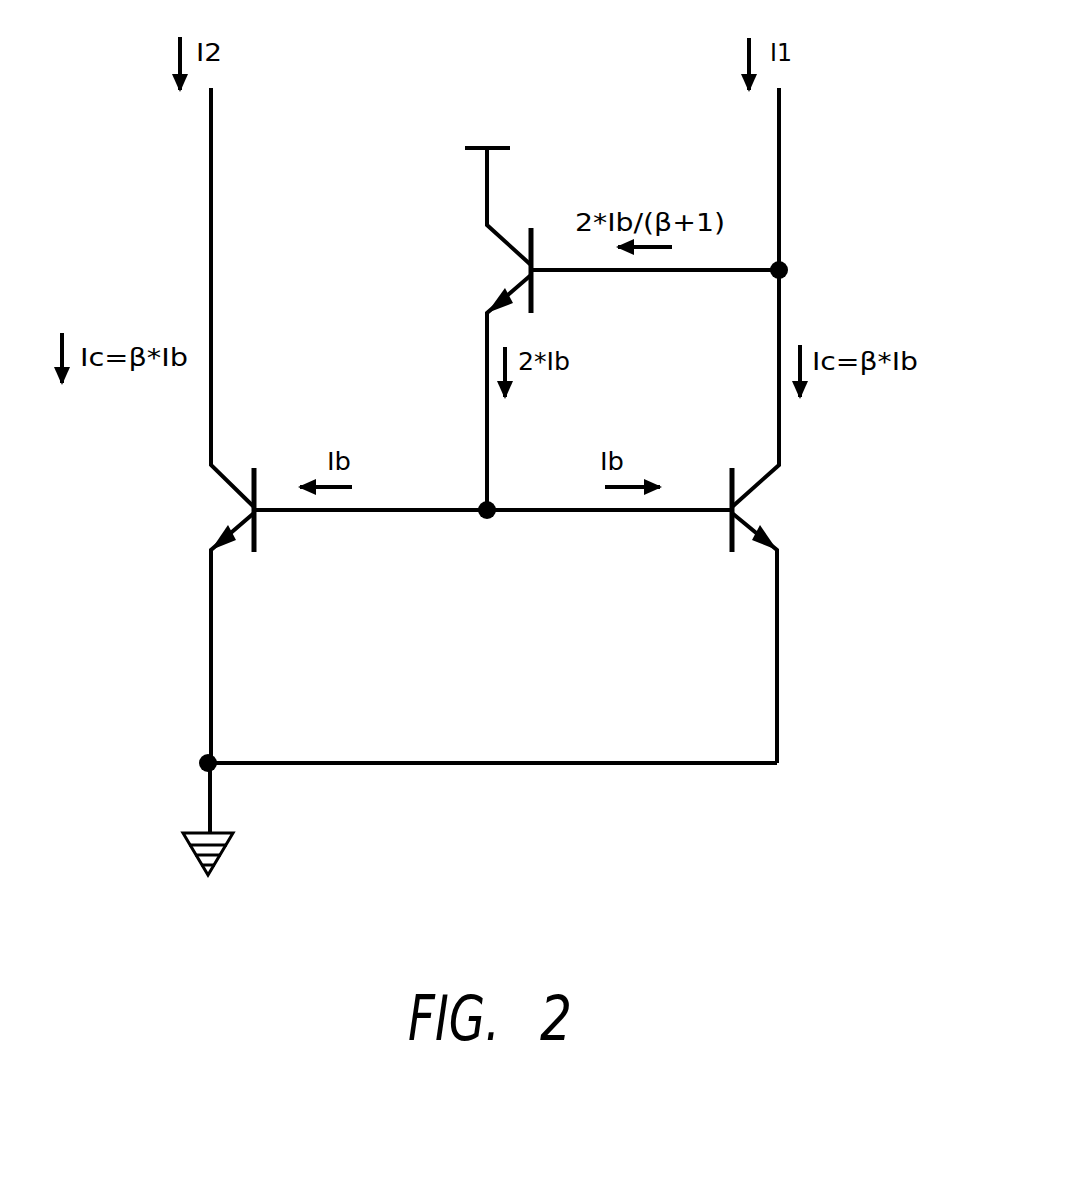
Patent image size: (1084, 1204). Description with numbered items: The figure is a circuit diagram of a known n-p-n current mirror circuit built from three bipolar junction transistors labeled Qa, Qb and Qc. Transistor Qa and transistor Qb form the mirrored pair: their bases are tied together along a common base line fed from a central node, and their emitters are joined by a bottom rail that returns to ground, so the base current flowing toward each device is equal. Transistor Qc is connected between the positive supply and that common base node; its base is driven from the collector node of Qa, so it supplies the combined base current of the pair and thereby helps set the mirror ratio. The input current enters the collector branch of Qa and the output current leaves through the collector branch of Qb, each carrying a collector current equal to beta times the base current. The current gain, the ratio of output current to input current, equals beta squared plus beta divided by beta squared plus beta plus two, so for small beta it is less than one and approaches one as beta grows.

The transistor Qa is at (666, 425).
The transistor Qb is at (312, 425).
The transistor Qc is at (599, 318).